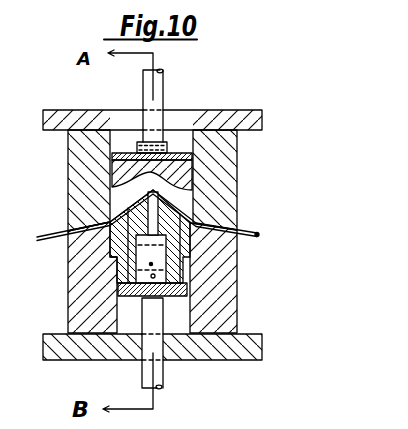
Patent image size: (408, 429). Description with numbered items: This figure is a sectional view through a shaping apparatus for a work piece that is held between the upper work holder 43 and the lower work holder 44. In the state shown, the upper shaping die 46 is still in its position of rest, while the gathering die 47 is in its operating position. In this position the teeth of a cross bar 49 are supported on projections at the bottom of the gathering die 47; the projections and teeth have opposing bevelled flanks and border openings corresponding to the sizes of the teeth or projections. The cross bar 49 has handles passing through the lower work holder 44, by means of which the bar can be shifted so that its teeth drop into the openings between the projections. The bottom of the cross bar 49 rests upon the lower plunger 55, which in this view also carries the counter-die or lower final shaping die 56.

The upper work holder 43 is at (96, 169).
The lower work holder 44 is at (222, 308).
The upper shaping die 46 is at (180, 170).
The gathering die 47 is at (147, 200).
The cross bar 49 is at (150, 264).
The lower plunger 55 is at (118, 292).
The lower final shaping die 56 is at (171, 270).